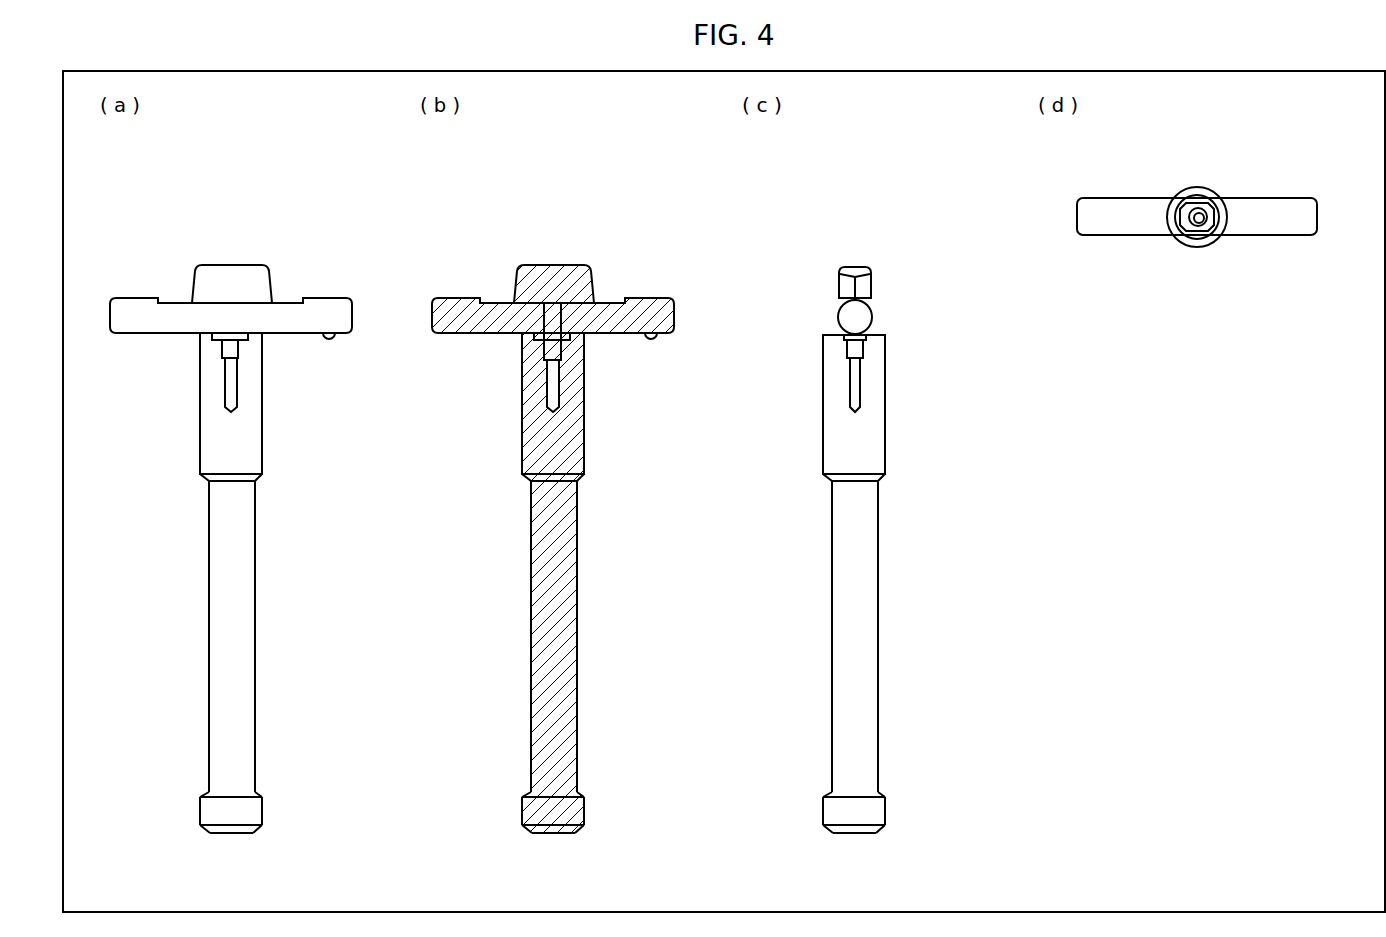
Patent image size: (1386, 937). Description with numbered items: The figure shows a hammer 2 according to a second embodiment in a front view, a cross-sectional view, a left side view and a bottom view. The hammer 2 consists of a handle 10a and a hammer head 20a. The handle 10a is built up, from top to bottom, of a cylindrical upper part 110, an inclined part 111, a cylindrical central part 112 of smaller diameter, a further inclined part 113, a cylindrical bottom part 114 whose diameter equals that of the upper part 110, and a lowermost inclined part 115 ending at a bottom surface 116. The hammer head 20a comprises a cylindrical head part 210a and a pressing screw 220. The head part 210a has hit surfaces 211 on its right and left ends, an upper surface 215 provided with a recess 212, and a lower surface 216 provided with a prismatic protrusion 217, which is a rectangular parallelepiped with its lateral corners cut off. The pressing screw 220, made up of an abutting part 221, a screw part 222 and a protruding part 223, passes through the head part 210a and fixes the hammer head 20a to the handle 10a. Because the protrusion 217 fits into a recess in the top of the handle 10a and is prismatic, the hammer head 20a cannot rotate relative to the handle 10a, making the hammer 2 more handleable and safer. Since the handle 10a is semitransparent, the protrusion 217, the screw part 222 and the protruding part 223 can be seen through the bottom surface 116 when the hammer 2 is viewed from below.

The hammer 2 is at (343, 170).
The handle 10a is at (208, 618).
The hammer head 20a is at (240, 177).
The upper part 110 is at (200, 438).
The inclined part 111 is at (262, 480).
The central part 112 is at (256, 648).
The inclined part 113 is at (258, 797).
The bottom part 114 is at (264, 815).
The inclined part 115 is at (260, 834).
The bottom surface 116 is at (236, 836).
The head part 210a is at (175, 298).
The hit surface 211 is at (100, 323).
The recess 212 is at (290, 298).
The upper surface 215 is at (137, 297).
The lower surface 216 is at (335, 333).
The protrusion 217 is at (215, 340).
The pressing screw 220 is at (218, 262).
The abutting part 221 is at (254, 265).
The screw part 222 is at (240, 347).
The protruding part 223 is at (237, 392).